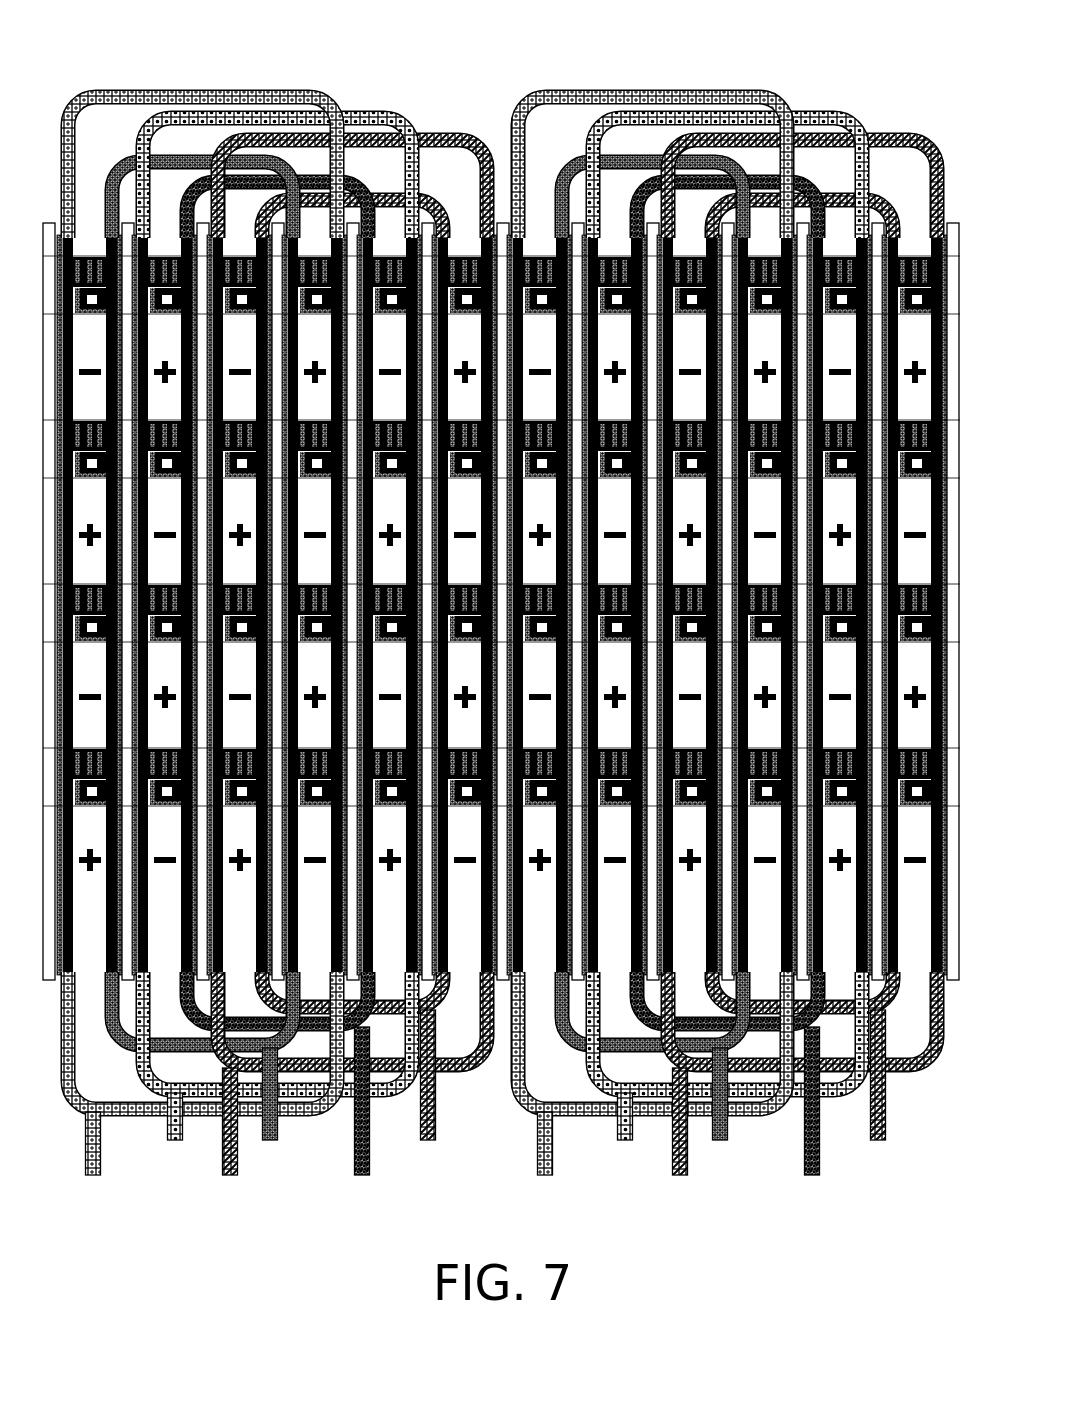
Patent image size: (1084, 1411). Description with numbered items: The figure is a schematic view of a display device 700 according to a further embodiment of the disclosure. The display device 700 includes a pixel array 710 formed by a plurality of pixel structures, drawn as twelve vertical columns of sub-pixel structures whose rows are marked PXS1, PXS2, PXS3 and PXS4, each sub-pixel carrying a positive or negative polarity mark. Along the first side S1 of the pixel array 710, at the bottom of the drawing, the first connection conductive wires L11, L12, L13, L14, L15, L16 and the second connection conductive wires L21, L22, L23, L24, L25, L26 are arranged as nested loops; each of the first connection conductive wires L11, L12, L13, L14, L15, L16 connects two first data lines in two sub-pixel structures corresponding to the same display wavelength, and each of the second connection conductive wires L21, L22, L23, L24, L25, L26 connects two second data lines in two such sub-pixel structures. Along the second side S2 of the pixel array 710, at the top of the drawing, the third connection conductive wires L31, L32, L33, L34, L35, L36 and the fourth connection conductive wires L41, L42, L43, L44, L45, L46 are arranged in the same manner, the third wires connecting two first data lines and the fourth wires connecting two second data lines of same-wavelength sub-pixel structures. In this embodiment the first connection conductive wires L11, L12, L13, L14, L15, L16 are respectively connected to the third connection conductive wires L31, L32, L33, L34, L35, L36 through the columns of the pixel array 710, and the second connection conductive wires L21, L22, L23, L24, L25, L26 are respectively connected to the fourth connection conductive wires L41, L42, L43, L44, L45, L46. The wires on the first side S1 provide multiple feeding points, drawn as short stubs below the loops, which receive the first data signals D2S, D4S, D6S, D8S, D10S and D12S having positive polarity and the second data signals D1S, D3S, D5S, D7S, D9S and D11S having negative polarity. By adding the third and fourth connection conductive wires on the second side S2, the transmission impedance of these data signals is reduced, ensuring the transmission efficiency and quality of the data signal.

The display device 700 is at (501, 631).
The pixel array 710 is at (501, 523).
The first side S1 is at (493, 1109).
The second side S2 is at (492, 127).
The first pixel row PXS1 is at (498, 357).
The second pixel row PXS2 is at (498, 520).
The third pixel row PXS3 is at (498, 685).
The fourth pixel row PXS4 is at (498, 846).
The first connection conductive wire L11 is at (123, 1052).
The first connection conductive wire L12 is at (405, 1097).
The first connection conductive wire L13 is at (441, 1014).
The first connection conductive wire L14 is at (573, 1052).
The first connection conductive wire L15 is at (855, 1097).
The first connection conductive wire L16 is at (891, 1014).
The second connection conductive wire L21 is at (304, 1116).
The second connection conductive wire L22 is at (190, 1031).
The second connection conductive wire L23 is at (479, 1072).
The second connection conductive wire L24 is at (756, 1116).
The second connection conductive wire L25 is at (640, 1031).
The second connection conductive wire L26 is at (929, 1072).
The third connection conductive wire L31 is at (128, 156).
The third connection conductive wire L32 is at (178, 111).
The third connection conductive wire L33 is at (438, 193).
The third connection conductive wire L34 is at (578, 156).
The third connection conductive wire L35 is at (630, 111).
The third connection conductive wire L36 is at (887, 193).
The fourth connection conductive wire L41 is at (102, 90).
The fourth connection conductive wire L42 is at (232, 175).
The fourth connection conductive wire L43 is at (286, 133).
The fourth connection conductive wire L44 is at (558, 90).
The fourth connection conductive wire L45 is at (683, 175).
The fourth connection conductive wire L46 is at (735, 133).
The second data signal D1S is at (98, 1159).
The first data signal D2S is at (174, 1134).
The second data signal D3S is at (231, 1137).
The first data signal D4S is at (276, 1112).
The second data signal D5S is at (366, 1116).
The first data signal D6S is at (431, 1093).
The second data signal D7S is at (546, 1159).
The first data signal D8S is at (626, 1134).
The second data signal D9S is at (681, 1137).
The first data signal D10S is at (725, 1112).
The second data signal D11S is at (820, 1116).
The first data signal D12S is at (880, 1093).